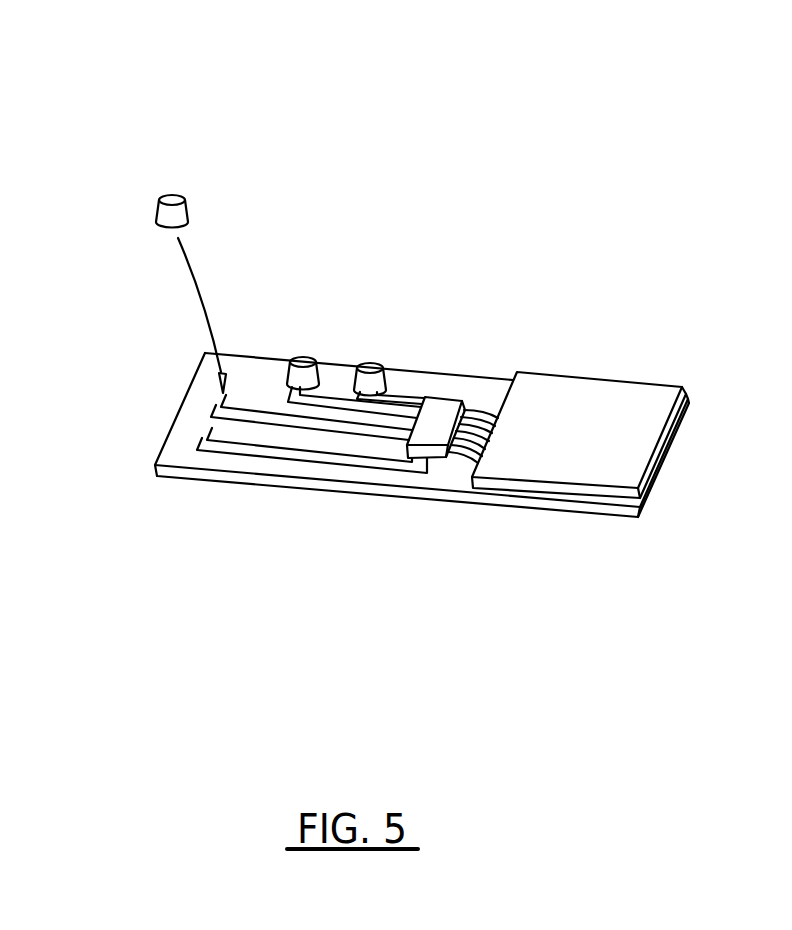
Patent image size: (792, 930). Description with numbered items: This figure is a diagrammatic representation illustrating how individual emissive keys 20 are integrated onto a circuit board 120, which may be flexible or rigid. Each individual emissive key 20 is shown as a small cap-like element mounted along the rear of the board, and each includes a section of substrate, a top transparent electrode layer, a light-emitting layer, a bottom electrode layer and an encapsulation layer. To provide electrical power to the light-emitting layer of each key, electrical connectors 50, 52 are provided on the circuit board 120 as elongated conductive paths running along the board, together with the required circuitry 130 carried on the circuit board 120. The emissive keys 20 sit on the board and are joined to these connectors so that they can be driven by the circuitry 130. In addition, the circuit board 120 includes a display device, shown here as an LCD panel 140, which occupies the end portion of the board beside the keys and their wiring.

The individual emissive key 20 is at (187, 209).
The electrical connector 50 is at (234, 437).
The electrical connector 52 is at (212, 404).
The circuit board 120 is at (543, 170).
The circuitry 130 is at (383, 520).
The LCD panel 140 is at (586, 408).